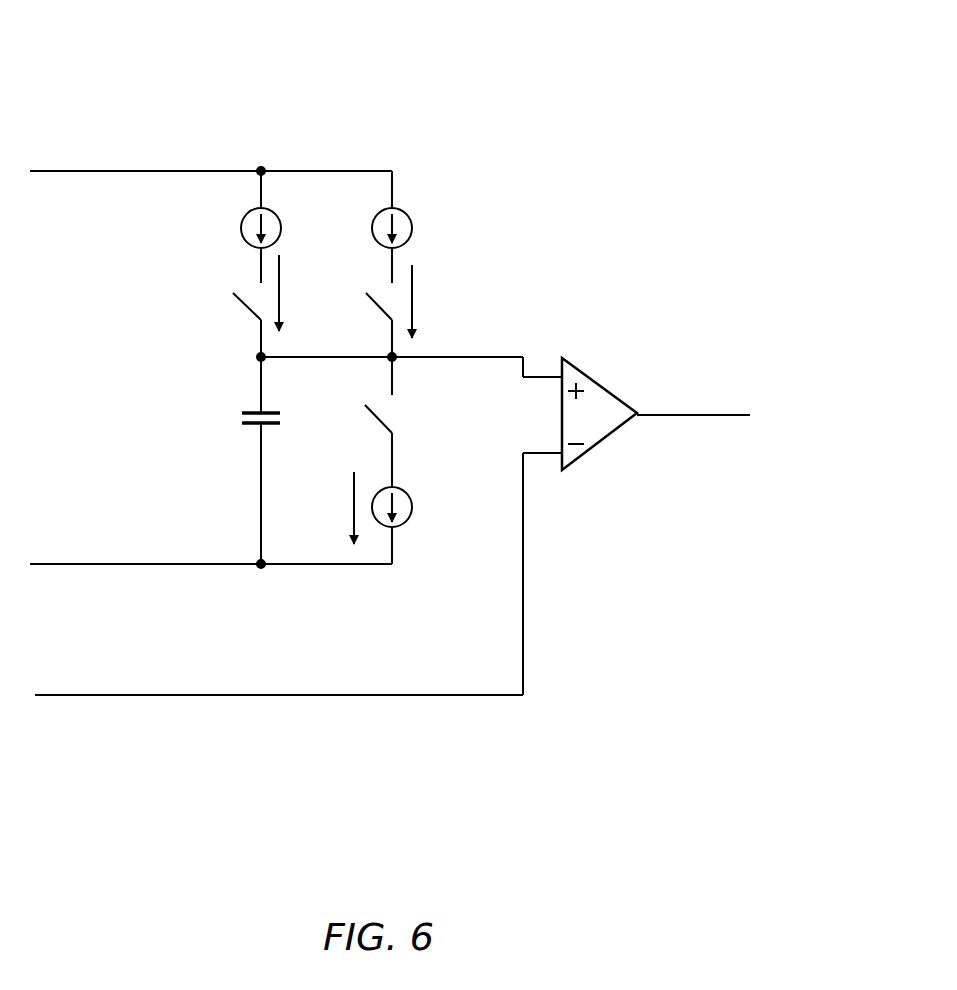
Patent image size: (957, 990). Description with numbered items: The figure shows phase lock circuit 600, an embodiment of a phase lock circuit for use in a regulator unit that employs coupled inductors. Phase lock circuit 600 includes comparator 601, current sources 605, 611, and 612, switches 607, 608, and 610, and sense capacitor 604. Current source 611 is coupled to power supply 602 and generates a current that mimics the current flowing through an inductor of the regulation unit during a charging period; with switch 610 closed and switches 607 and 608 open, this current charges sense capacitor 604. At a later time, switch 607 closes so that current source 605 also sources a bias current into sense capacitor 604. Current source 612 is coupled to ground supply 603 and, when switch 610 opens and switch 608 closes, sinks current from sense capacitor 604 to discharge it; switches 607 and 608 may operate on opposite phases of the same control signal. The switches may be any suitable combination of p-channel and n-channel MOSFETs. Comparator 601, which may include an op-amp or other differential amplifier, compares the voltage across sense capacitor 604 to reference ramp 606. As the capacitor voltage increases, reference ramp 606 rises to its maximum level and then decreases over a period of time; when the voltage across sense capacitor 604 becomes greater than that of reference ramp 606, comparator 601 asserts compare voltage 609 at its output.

The phase lock circuit 600 is at (644, 94).
The comparator 601 is at (600, 443).
The power supply 602 is at (145, 171).
The ground supply 603 is at (145, 565).
The sense capacitor 604 is at (243, 429).
The current source 605 is at (434, 221).
The reference ramp 606 is at (279, 694).
The switch 607 is at (381, 313).
The switch 608 is at (392, 412).
The compare voltage 609 is at (715, 404).
The switch 610 is at (247, 313).
The current source 611 is at (219, 230).
The current source 612 is at (433, 507).